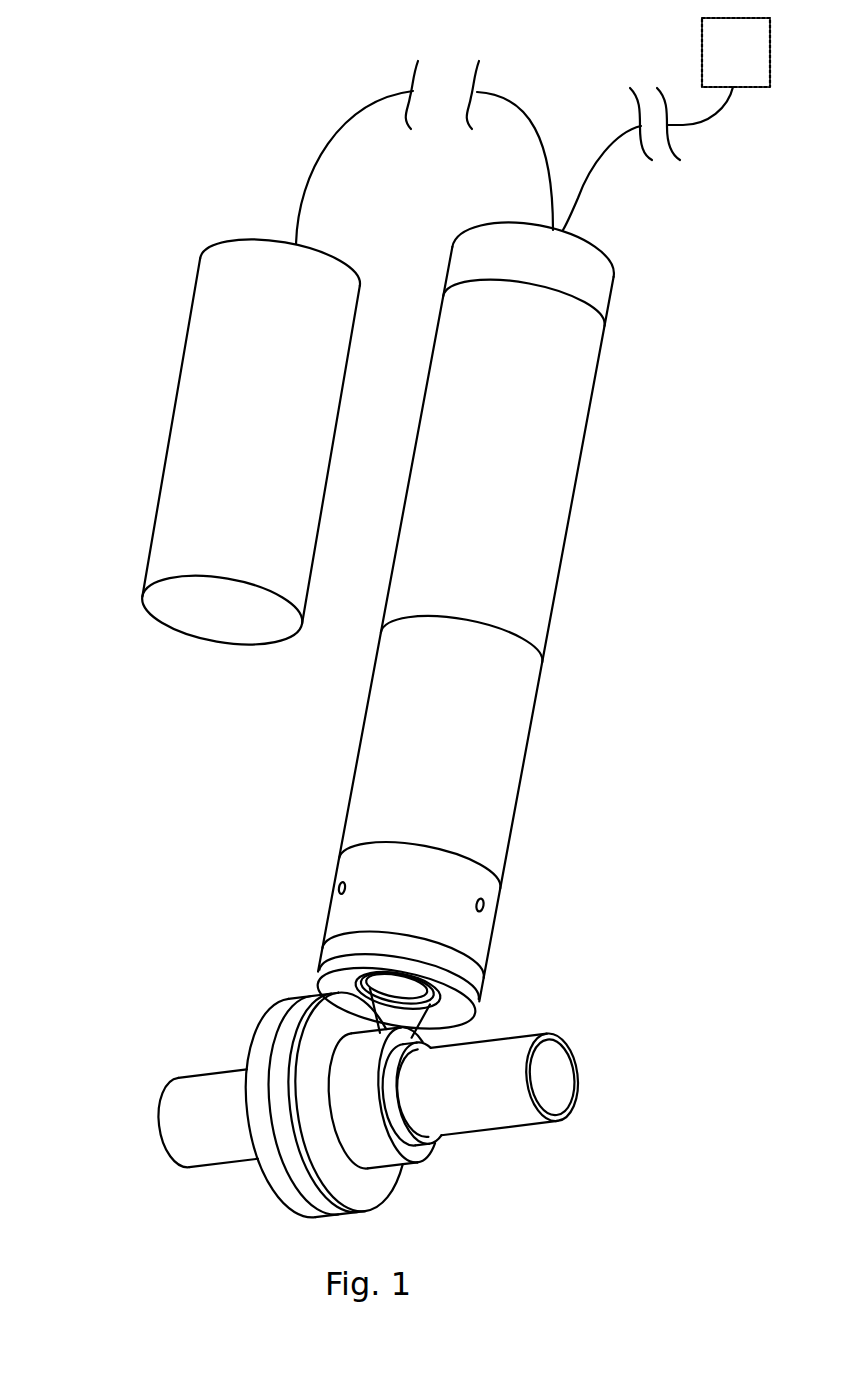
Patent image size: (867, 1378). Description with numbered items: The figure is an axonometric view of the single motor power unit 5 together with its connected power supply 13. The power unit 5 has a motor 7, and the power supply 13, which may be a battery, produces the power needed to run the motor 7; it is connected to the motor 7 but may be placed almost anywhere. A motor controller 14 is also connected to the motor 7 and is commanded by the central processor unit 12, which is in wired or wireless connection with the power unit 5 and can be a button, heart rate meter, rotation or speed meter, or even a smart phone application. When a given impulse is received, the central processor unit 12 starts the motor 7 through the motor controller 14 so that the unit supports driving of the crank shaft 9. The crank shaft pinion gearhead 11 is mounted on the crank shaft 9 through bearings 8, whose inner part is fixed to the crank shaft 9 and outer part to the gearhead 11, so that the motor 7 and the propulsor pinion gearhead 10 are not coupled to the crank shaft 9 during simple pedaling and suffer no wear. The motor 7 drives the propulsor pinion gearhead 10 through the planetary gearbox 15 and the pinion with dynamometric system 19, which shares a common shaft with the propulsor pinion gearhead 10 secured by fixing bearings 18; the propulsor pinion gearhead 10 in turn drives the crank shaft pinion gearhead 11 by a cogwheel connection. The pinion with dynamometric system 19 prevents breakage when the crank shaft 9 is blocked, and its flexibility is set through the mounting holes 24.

The single motor power unit 5 is at (600, 365).
The motor 7 is at (533, 525).
The bearings 8 is at (377, 1070).
The crank shaft 9 is at (498, 1062).
The propulsor pinion gearhead 10 is at (392, 1007).
The crank shaft pinion gearhead 11 is at (283, 1062).
The central processor unit 12 is at (712, 70).
The power supply 13 is at (216, 487).
The motor controller 14 is at (575, 278).
The planetary gearbox 15 is at (482, 788).
The fixing bearings 18 is at (473, 978).
The pinion with dynamometric system 19 is at (473, 943).
The mounting holes 24 is at (337, 884).